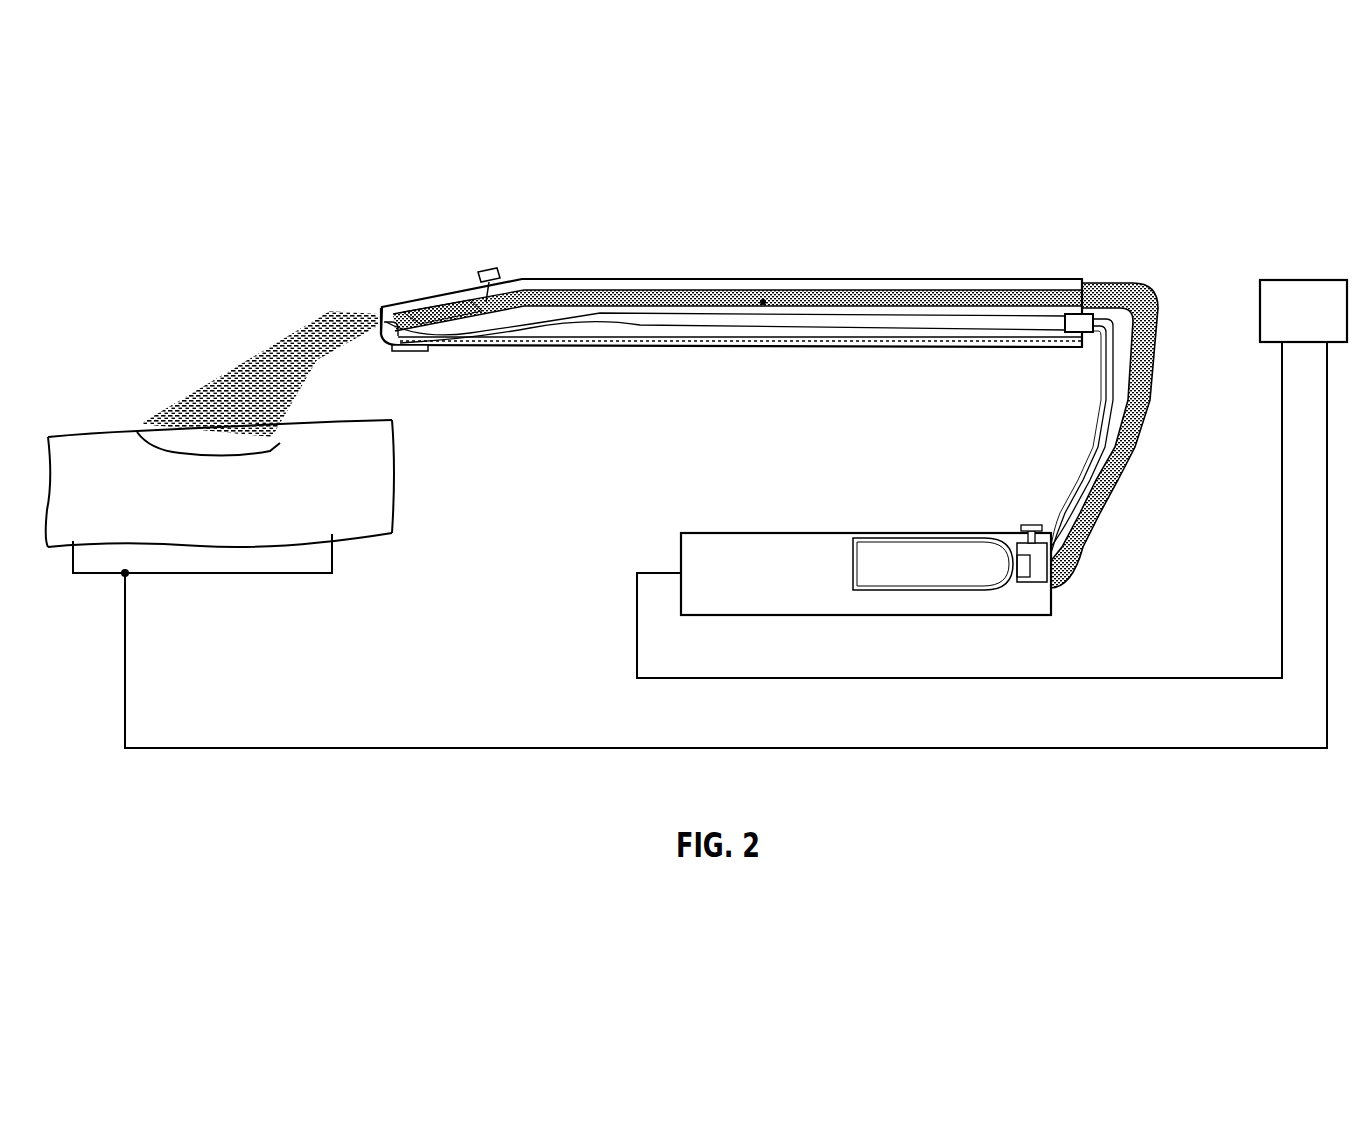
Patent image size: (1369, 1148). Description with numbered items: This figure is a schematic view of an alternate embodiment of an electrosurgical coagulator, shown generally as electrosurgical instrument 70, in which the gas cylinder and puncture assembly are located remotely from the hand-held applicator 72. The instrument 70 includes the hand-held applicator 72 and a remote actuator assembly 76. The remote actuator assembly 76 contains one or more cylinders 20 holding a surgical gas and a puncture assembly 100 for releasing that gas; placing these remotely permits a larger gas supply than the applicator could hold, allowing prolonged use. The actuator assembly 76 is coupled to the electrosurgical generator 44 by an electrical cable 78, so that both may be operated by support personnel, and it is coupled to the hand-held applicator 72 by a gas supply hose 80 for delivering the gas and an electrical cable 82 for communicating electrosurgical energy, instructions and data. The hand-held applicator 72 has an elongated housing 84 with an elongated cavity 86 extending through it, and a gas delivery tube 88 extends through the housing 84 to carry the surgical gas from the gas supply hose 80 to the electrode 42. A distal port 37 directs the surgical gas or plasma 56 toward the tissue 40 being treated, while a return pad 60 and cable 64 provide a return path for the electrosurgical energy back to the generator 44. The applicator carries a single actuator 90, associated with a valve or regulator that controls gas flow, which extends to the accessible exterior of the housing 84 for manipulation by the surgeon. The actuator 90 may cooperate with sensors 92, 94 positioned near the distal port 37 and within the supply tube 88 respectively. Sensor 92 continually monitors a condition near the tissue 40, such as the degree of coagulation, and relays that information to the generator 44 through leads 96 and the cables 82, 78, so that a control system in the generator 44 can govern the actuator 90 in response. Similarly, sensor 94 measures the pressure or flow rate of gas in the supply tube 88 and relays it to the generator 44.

The electrosurgical instrument 70 is at (1146, 189).
The hand-held applicator 72 is at (893, 279).
The elongated housing 84 is at (798, 282).
The elongated cavity 86 is at (689, 291).
The gas delivery tube 88 is at (594, 283).
The actuator 90 is at (489, 275).
The distal port 37 is at (377, 309).
The electrode 42 is at (386, 343).
The sensor 92 is at (416, 353).
The leads 96 is at (578, 330).
The sensor 94 is at (763, 302).
The electrical cable 82 is at (1099, 402).
The gas supply hose 80 is at (1136, 487).
The remote actuator assembly 76 is at (767, 531).
The cylinder 20 is at (882, 536).
The puncture assembly 100 is at (1018, 536).
The electrosurgical generator 44 is at (1310, 280).
The electrical cable 78 is at (1085, 677).
The cable 64 is at (630, 748).
The return pad 60 is at (333, 554).
The tissue 40 is at (185, 516).
The surgical gas or plasma 56 is at (258, 353).